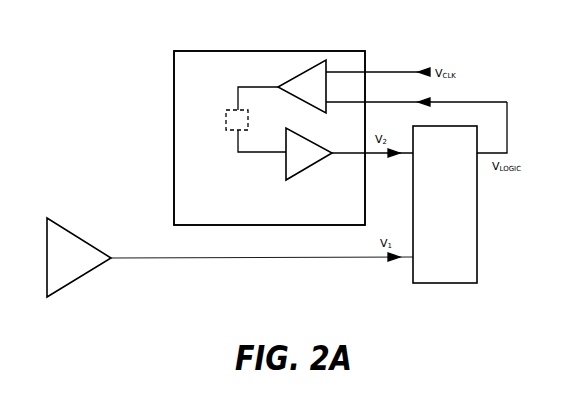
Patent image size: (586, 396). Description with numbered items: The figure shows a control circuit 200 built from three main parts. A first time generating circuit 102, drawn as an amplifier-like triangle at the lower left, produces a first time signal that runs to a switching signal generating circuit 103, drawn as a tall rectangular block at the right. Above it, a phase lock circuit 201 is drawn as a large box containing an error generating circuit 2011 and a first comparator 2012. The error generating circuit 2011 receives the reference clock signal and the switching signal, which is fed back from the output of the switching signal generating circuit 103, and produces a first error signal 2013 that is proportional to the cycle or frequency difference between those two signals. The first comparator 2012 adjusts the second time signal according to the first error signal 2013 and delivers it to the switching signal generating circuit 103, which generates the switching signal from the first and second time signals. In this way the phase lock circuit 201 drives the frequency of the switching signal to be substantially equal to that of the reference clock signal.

The control circuit 200 is at (388, 53).
The phase lock circuit 201 is at (232, 68).
The error generating circuit 2011 is at (320, 102).
The first comparator 2012 is at (300, 157).
The first error signal 2013 is at (236, 95).
The first time generating circuit 102 is at (67, 277).
The switching signal generating circuit 103 is at (432, 267).